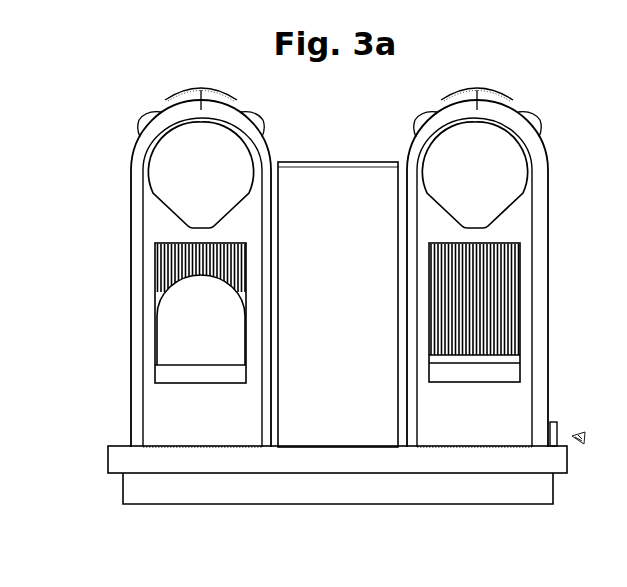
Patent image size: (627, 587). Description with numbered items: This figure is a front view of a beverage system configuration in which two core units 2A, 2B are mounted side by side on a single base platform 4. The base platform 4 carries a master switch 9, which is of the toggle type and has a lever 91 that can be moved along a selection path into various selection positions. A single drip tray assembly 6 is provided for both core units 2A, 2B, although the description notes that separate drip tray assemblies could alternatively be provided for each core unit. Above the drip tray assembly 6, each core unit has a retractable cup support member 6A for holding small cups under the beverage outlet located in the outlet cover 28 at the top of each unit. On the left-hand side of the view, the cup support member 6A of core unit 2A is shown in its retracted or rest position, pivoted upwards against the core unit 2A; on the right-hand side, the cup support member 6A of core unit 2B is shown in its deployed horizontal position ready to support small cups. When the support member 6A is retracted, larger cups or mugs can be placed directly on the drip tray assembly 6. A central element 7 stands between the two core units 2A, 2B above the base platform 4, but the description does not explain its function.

The core unit 2A is at (128, 166).
The core unit 2B is at (549, 289).
The outlet cover 28 is at (199, 217).
The central housing block 7 is at (358, 173).
The retractable cup support member 6A is at (180, 343).
The drip tray assembly 6 is at (116, 445).
The base platform 4 is at (122, 490).
The lever 91 is at (558, 432).
The master switch 9 is at (586, 440).